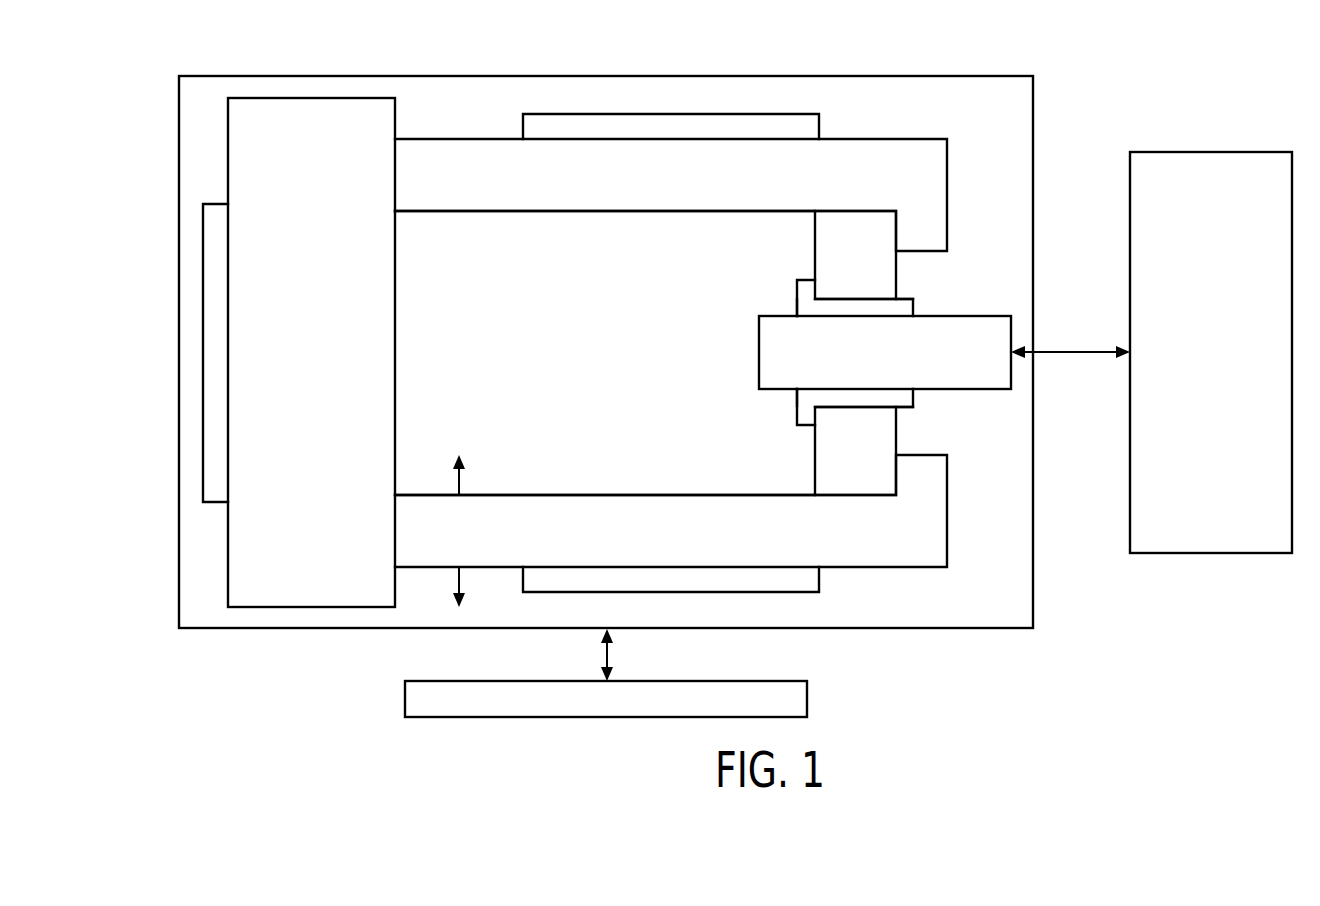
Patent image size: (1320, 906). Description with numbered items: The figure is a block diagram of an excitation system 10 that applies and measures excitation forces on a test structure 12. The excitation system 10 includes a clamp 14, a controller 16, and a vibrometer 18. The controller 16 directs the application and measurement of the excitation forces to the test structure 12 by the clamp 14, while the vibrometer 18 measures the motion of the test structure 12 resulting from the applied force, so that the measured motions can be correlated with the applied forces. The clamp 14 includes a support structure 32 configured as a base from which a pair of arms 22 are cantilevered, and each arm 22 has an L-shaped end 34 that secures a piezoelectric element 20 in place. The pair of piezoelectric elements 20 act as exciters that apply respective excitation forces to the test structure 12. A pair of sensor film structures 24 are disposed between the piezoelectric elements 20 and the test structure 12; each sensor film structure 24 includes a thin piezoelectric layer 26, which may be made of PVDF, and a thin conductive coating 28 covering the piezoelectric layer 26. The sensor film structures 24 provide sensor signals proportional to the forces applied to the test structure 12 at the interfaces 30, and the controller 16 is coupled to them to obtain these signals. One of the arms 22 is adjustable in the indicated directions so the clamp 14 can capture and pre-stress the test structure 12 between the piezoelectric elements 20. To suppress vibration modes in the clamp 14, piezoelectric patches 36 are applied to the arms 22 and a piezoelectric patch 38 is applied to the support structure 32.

The excitation system 10 is at (1085, 47).
The test structure 12 is at (871, 368).
The clamp 14 is at (1033, 588).
The controller 16 is at (807, 698).
The vibrometer 18 is at (1210, 152).
The piezoelectric elements 20 is at (814, 254).
The arms 22 is at (644, 212).
The sensor film structures 24 is at (790, 287).
The piezoelectric layer 26 is at (899, 306).
The conductive coating 28 is at (914, 310).
The interfaces 30 is at (789, 310).
The support structure 32 is at (228, 149).
The L-shaped end 34 is at (947, 176).
The piezoelectric patches 36 is at (670, 114).
The piezoelectric patch 38 is at (203, 349).